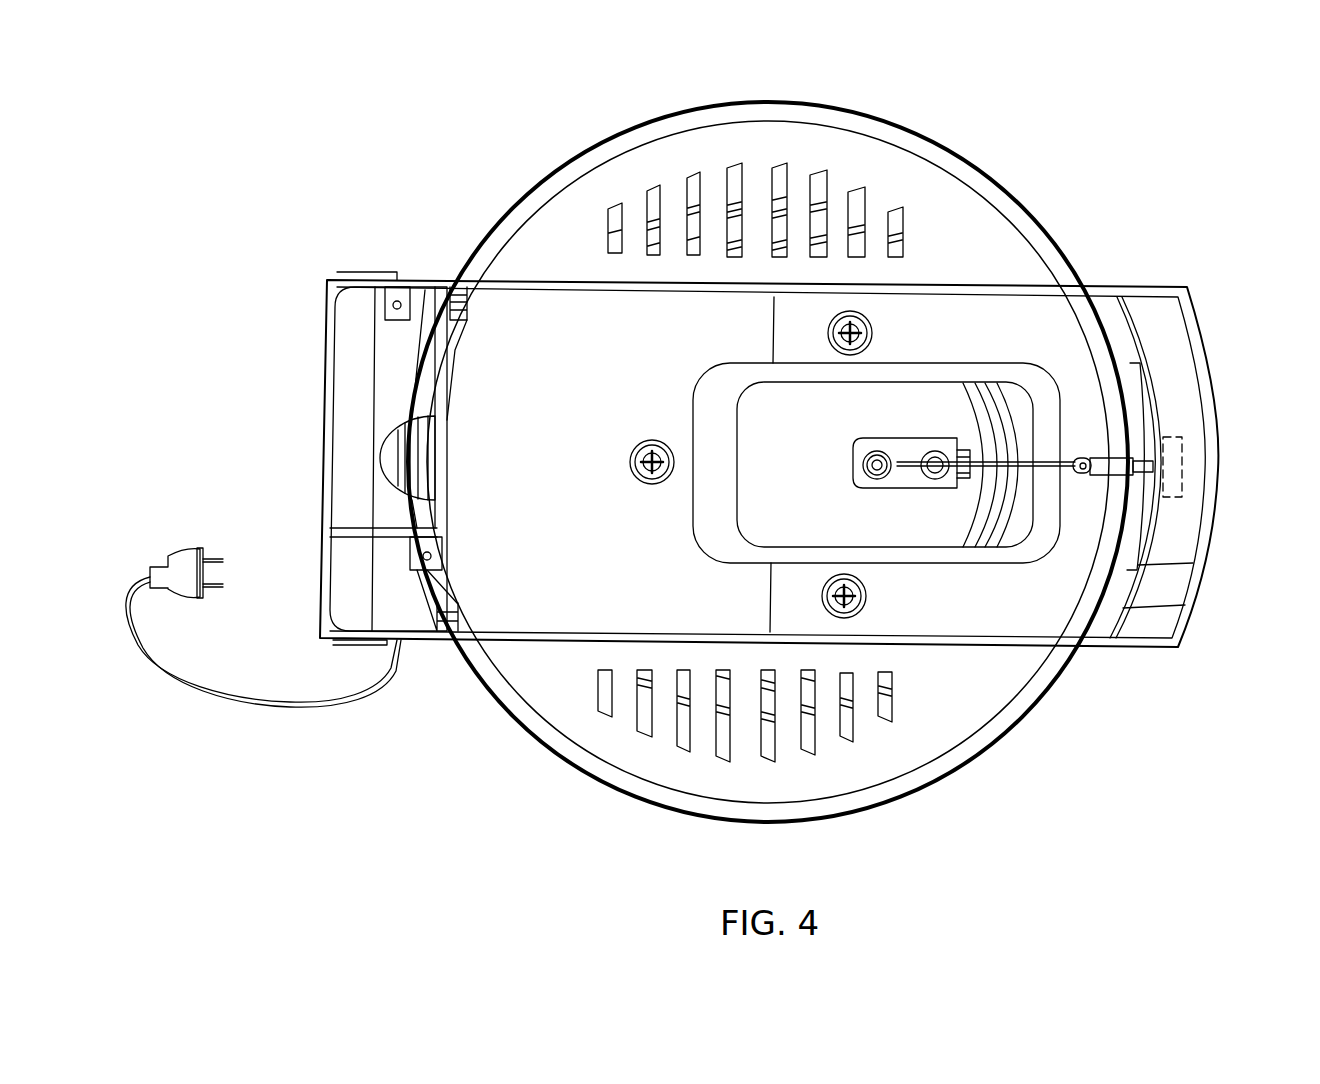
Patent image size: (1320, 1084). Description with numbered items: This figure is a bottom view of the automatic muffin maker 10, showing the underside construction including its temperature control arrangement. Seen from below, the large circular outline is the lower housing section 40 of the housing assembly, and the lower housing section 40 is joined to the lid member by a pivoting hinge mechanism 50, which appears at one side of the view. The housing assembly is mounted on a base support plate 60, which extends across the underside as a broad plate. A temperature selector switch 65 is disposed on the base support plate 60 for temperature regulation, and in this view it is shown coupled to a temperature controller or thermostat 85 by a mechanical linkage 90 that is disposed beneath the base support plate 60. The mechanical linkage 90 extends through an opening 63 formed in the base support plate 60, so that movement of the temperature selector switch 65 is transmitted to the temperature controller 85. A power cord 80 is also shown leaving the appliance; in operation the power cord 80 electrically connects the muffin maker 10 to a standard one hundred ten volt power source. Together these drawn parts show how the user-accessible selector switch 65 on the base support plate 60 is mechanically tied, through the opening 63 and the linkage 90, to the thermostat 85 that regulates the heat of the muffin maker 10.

The automatic muffin maker 10 is at (523, 130).
The lower housing section 40 is at (970, 714).
The pivoting hinge mechanism 50 is at (358, 253).
The base support plate 60 is at (553, 457).
The opening 63 is at (767, 440).
The temperature selector switch 65 is at (1175, 433).
The power cord 80 is at (220, 691).
The temperature controller 85 is at (910, 438).
The mechanical linkage 90 is at (1082, 487).